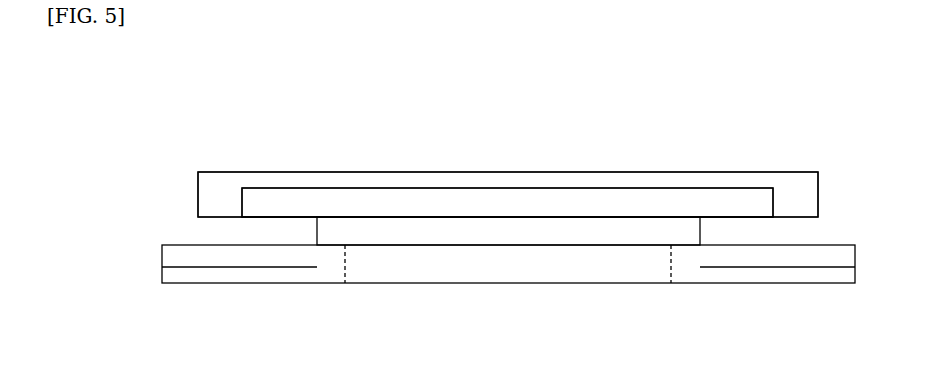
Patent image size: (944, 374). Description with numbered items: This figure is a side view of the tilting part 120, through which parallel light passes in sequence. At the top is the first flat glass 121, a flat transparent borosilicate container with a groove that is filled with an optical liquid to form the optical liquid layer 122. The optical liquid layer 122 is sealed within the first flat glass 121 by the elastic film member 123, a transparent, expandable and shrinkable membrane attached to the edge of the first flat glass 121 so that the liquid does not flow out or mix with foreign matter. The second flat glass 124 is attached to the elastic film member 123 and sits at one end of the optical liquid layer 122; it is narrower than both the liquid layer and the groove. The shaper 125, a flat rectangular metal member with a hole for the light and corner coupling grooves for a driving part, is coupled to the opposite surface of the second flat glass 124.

The tilting part 120 is at (181, 84).
The first flat glass 121 is at (800, 190).
The optical liquid layer 122 is at (713, 202).
The elastic film member 123 is at (274, 215).
The second flat glass 124 is at (603, 228).
The shaper 125 is at (774, 277).